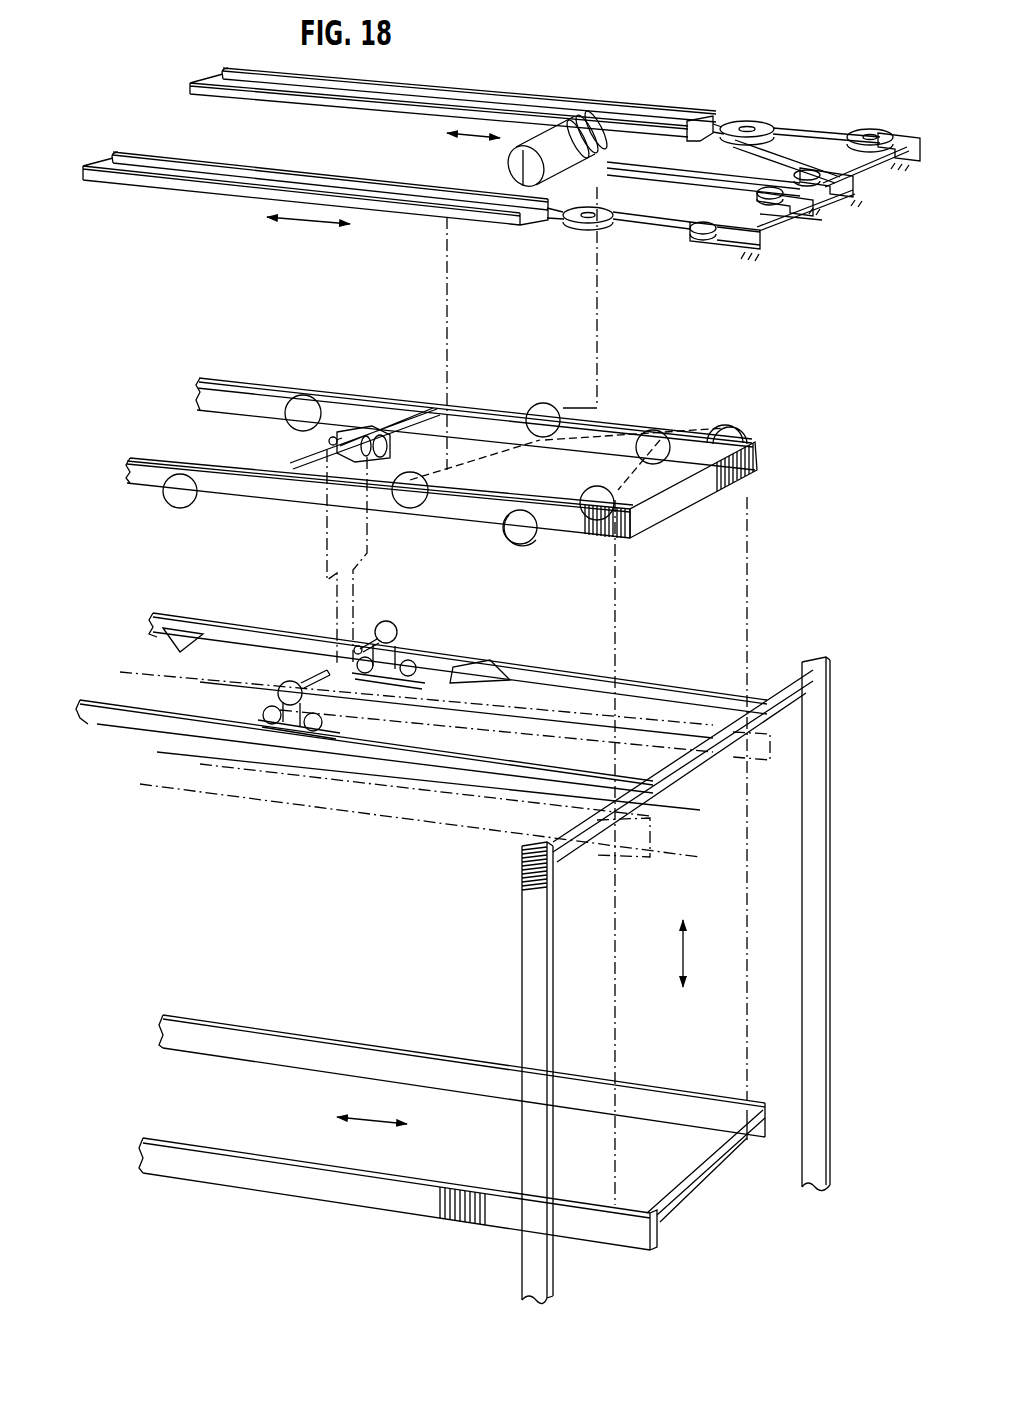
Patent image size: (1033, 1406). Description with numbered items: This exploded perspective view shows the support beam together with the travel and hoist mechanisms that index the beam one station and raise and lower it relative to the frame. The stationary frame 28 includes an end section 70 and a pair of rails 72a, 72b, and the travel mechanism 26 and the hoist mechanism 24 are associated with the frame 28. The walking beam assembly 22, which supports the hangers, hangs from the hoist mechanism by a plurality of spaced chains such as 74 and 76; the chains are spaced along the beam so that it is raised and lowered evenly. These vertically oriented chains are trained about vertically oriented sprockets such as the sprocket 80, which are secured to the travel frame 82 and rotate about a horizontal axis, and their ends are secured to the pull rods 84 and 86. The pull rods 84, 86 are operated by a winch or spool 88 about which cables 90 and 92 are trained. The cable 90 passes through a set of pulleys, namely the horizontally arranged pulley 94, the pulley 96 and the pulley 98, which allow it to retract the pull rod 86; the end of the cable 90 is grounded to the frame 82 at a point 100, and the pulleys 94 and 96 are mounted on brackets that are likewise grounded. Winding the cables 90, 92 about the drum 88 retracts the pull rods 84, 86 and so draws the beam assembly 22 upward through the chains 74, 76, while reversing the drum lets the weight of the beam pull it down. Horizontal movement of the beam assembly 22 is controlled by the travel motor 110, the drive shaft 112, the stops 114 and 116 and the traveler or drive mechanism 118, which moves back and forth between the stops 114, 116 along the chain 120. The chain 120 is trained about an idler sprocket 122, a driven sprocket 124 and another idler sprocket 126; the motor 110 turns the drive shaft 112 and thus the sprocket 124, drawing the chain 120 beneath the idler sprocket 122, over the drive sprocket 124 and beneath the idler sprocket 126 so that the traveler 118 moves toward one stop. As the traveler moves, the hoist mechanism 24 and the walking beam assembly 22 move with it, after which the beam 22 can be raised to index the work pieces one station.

The walking beam assembly 22 is at (268, 1194).
The hoist mechanism 24 is at (481, 84).
The travel mechanism 26 is at (74, 740).
The stationary frame 28 is at (832, 1057).
The end section 70 is at (831, 712).
The rail 72a is at (660, 680).
The rail 72b is at (450, 770).
The chain 74 is at (449, 282).
The chain 76 is at (600, 297).
The sprocket 80 is at (412, 508).
The travel frame 82 is at (757, 445).
The pull rod 84 is at (410, 217).
The pull rod 86 is at (523, 97).
The winch or spool 88 is at (612, 130).
The cable 90 is at (640, 182).
The cable 92 is at (634, 200).
The horizontally arranged pulley 94 is at (833, 198).
The pulley 96 is at (863, 130).
The pulley 98 is at (760, 122).
The grounding point 100 is at (880, 193).
The travel motor 110 is at (390, 420).
The drive shaft 112 is at (300, 674).
The stop 114 is at (187, 632).
The stop 116 is at (497, 662).
The traveler or drive mechanism 118 is at (418, 628).
The chain 120 is at (258, 660).
The idler sprocket 122 is at (425, 648).
The driven sprocket 124 is at (396, 620).
The idler sprocket 126 is at (482, 655).